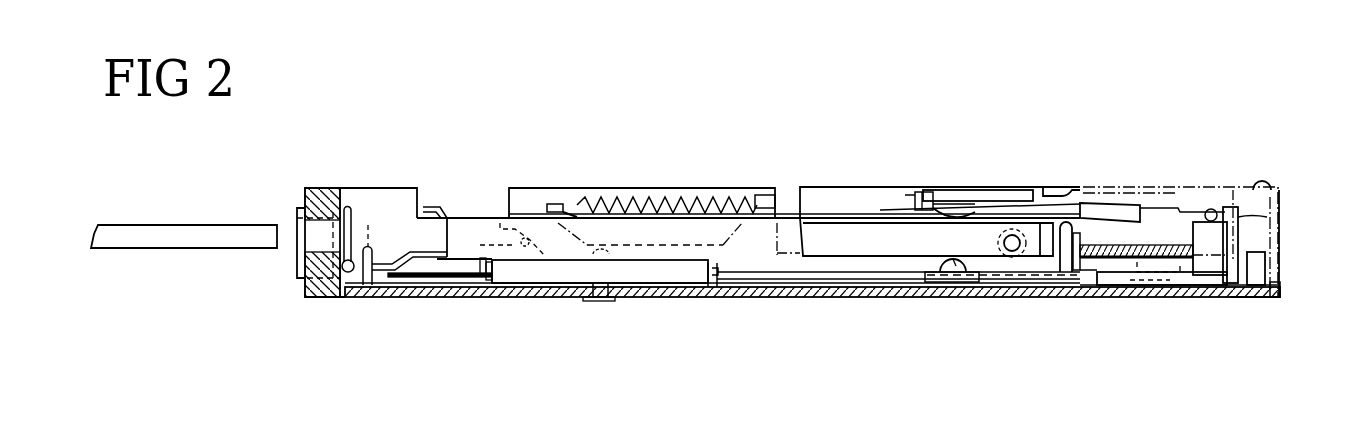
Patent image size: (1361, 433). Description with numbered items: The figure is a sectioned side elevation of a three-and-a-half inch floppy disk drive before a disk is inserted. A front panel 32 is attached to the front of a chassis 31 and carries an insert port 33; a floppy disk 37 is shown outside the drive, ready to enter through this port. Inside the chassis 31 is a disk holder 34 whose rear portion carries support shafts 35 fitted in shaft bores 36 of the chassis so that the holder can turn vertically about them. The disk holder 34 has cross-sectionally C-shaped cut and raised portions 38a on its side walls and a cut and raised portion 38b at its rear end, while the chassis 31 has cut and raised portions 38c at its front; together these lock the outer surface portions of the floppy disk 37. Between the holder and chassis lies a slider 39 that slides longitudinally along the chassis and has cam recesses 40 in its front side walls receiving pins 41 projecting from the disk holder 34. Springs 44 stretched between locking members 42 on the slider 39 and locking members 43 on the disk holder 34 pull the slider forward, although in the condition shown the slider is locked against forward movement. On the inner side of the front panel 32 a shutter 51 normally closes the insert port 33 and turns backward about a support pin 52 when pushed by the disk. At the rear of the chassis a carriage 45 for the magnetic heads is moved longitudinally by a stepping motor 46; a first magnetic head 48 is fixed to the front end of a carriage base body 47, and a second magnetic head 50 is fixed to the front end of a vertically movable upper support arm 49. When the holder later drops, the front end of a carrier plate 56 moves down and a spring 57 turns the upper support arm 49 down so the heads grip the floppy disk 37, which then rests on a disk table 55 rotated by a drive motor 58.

The chassis 31 is at (845, 297).
The front panel 32 is at (305, 298).
The insert port 33 is at (300, 222).
The disk holder 34 is at (836, 216).
The support shaft 35 is at (1033, 246).
The shaft bore 36 is at (1001, 258).
The floppy disk 37 is at (146, 222).
The cut and raised portion 38a is at (868, 232).
The cut and raised portion 38b is at (1064, 232).
The cut and raised portion 38c is at (373, 258).
The slider 39 is at (470, 258).
The cam recess 40 is at (527, 248).
The pin 41 is at (488, 225).
The locking member 42 is at (749, 196).
The locking member 43 is at (555, 204).
The spring 44 is at (673, 193).
The carriage 45 is at (1067, 193).
The stepping motor 46 is at (1236, 220).
The carriage base body 47 is at (1105, 278).
The first magnetic head 48 is at (952, 292).
The upper support arm 49 is at (1049, 195).
The second magnetic head 50 is at (960, 209).
The shutter 51 is at (350, 240).
The support pin 52 is at (366, 287).
The disk table 55 is at (652, 274).
The carrier plate 56 is at (905, 193).
The spring 57 is at (1180, 209).
The drive motor 58 is at (1278, 213).